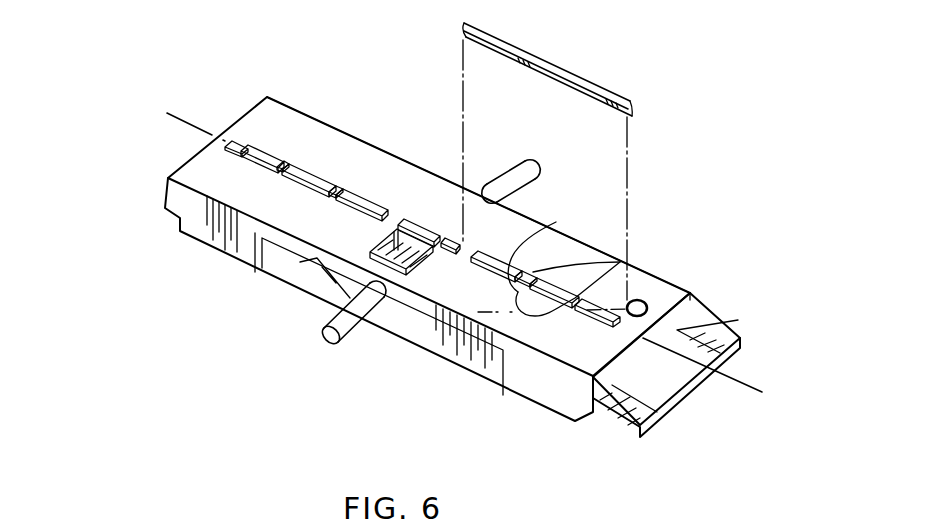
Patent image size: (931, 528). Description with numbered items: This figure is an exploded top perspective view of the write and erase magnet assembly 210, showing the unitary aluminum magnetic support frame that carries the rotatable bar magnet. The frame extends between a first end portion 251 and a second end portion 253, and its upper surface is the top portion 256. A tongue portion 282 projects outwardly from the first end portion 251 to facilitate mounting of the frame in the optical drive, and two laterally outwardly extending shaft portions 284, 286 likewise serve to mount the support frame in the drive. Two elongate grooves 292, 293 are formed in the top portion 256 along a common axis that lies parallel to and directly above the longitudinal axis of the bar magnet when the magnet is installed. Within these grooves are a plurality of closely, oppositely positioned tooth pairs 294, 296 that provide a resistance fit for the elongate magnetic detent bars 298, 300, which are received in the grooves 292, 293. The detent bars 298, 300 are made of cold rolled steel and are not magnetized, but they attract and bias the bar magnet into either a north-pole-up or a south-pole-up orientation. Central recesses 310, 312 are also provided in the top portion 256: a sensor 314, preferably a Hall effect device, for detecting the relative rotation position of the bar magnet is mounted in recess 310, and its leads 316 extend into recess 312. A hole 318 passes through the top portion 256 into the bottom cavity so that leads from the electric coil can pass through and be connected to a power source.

The write and erase magnet assembly 210 is at (218, 102).
The first end portion 251 is at (693, 286).
The second end portion 253 is at (300, 86).
The top portion 256 is at (622, 221).
The tongue portion 282 is at (628, 410).
The shaft portion 284 is at (342, 340).
The shaft portion 286 is at (510, 178).
The elongate groove 292 is at (555, 245).
The elongate groove 293 is at (370, 192).
The tooth pair 294 is at (633, 258).
The tooth pair 296 is at (650, 280).
The magnetic detent bar 298 is at (552, 66).
The magnetic detent bar 300 is at (278, 152).
The central recess 310 is at (482, 248).
The central recess 312 is at (423, 268).
The sensor 314 is at (433, 232).
The leads 316 is at (317, 260).
The hole 318 is at (647, 308).